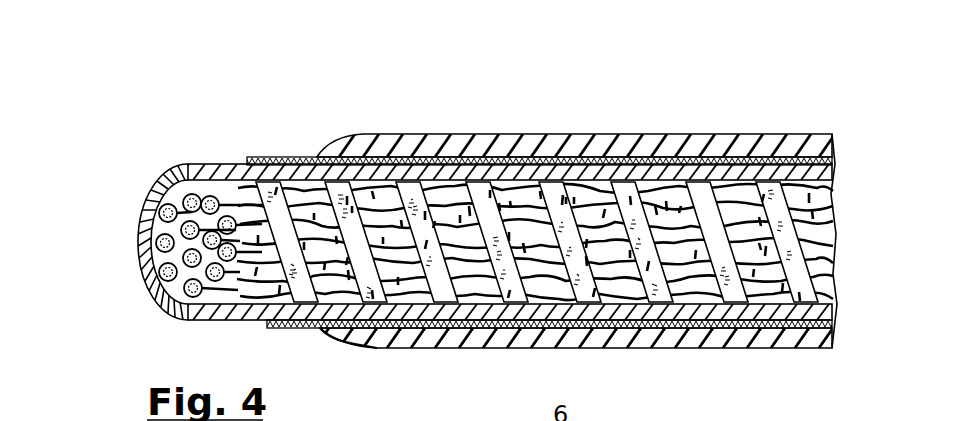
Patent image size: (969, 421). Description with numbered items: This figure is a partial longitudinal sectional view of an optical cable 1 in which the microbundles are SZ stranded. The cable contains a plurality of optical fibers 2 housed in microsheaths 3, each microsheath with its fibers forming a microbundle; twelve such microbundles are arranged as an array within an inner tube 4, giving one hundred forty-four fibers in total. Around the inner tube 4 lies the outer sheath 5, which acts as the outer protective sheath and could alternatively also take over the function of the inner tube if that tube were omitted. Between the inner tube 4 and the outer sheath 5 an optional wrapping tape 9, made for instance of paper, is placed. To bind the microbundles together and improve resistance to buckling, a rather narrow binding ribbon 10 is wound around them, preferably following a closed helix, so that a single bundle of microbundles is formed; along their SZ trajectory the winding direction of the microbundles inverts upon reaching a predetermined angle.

The optical cable 1 is at (463, 212).
The optical fibers 2 is at (142, 222).
The microsheaths 3 is at (228, 196).
The inner tube 4 is at (289, 168).
The outer sheath 5 is at (400, 140).
The wrapping tape 9 is at (677, 160).
The binding ribbon 10 is at (475, 183).